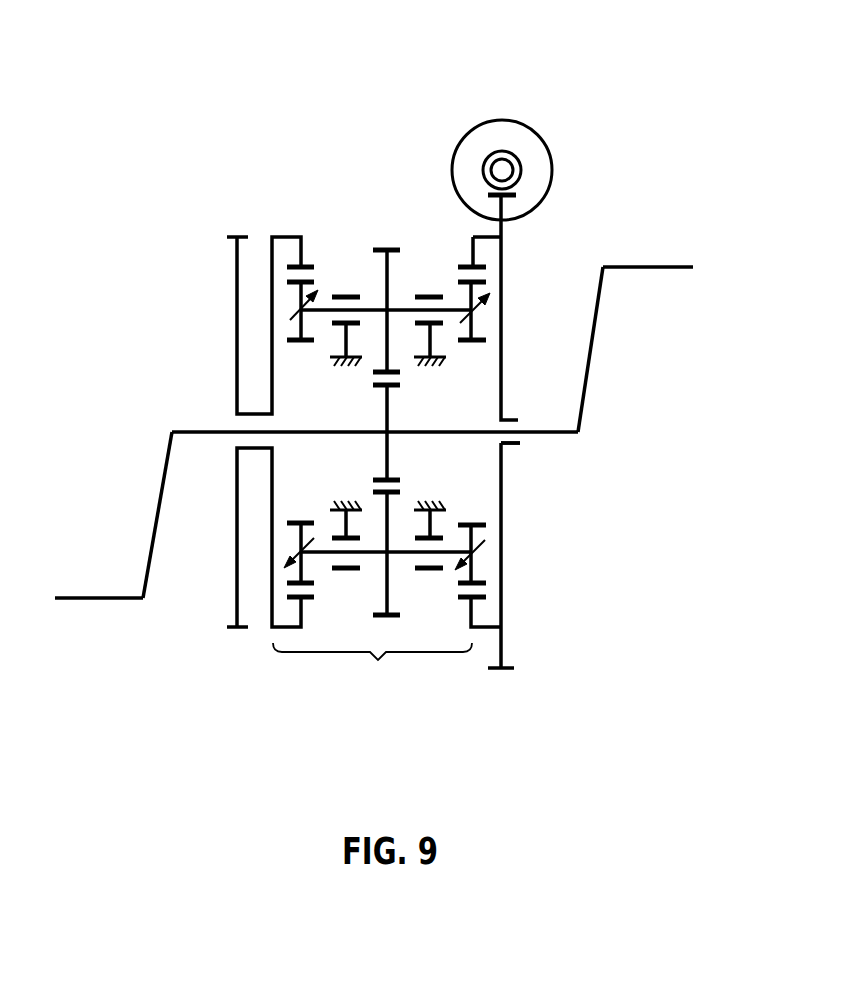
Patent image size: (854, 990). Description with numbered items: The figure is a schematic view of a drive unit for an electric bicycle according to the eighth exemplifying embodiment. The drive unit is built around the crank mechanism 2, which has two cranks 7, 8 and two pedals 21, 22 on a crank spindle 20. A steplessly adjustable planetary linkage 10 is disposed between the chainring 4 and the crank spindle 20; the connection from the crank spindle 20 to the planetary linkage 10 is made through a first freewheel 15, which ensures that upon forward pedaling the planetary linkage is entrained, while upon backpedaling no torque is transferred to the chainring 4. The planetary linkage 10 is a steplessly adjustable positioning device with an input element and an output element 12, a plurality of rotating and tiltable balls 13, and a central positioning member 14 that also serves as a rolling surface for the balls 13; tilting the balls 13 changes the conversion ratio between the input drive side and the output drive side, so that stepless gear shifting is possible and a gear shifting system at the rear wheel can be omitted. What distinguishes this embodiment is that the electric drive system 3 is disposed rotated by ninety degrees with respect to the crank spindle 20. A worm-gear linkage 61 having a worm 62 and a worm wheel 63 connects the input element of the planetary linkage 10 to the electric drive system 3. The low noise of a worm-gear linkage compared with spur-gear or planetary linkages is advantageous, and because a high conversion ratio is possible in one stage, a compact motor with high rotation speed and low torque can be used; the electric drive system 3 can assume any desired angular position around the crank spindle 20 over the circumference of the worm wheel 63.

The crank mechanism 2 is at (634, 397).
The electric drive system 3 is at (510, 143).
The chainring 4 is at (233, 312).
The crank 7 is at (594, 342).
The crank 8 is at (158, 492).
The steplessly adjustable planetary linkage 10 is at (372, 597).
The output element 12 is at (276, 505).
The balls 13 is at (371, 309).
The central positioning member 14 is at (385, 410).
The first freewheel 15 is at (525, 440).
The crank spindle 20 is at (430, 435).
The pedal 21 is at (660, 265).
The pedal 22 is at (95, 602).
The worm-gear linkage 61 is at (522, 157).
The worm 62 is at (483, 172).
The worm wheel 63 is at (505, 203).